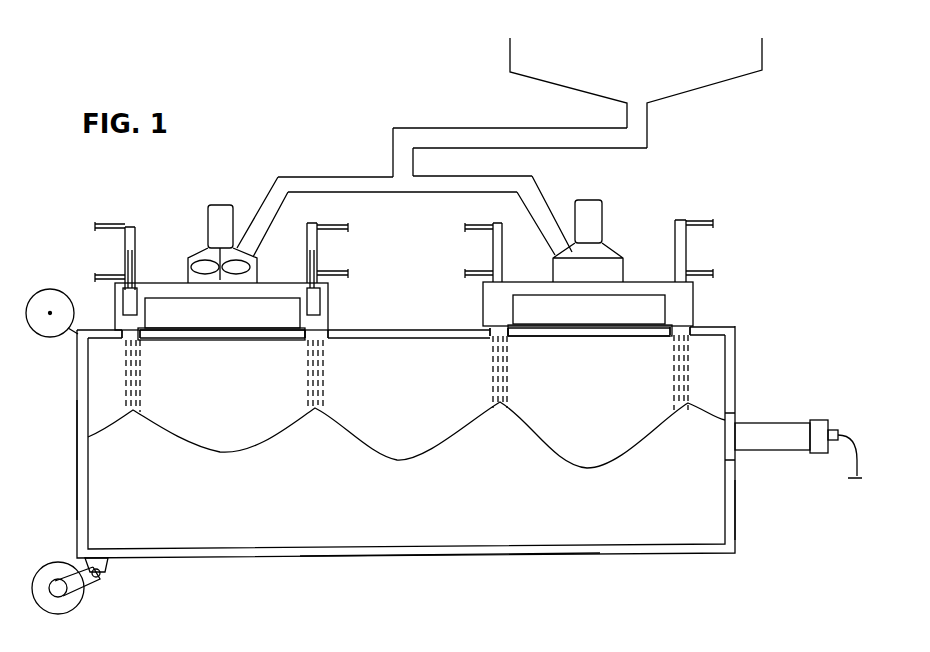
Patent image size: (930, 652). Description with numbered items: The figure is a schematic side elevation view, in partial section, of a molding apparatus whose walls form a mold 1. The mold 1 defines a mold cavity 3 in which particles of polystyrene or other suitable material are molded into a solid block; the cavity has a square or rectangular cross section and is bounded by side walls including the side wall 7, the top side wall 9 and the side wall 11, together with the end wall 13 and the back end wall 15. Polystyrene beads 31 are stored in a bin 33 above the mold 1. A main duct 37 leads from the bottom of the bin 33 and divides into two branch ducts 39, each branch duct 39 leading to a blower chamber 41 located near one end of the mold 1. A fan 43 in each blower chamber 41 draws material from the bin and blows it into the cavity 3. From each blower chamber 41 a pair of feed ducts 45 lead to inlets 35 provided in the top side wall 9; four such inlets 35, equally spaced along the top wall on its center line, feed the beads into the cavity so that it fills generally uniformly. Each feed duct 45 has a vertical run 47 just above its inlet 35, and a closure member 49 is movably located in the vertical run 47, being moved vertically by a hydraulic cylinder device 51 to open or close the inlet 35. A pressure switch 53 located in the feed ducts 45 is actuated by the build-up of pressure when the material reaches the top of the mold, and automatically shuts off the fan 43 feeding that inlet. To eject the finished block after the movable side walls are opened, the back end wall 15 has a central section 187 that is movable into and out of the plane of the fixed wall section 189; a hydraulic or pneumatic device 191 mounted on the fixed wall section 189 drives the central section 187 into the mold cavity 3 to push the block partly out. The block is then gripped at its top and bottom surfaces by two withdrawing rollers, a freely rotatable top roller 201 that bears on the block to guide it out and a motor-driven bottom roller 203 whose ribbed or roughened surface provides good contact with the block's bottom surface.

The mold 1 is at (275, 578).
The mold cavity 3 is at (700, 376).
The side wall 7 is at (604, 389).
The top side wall 9 is at (718, 326).
The side wall 11 is at (656, 558).
The end wall 13 is at (77, 500).
The back end wall 15 is at (738, 525).
The polystyrene beads 31 is at (512, 53).
The bin 33 is at (763, 52).
The inlets 35 is at (145, 340).
The main duct 37 is at (438, 128).
The branch ducts 39 is at (278, 183).
The blower chamber 41 is at (207, 240).
The fan 43 is at (247, 262).
The feed ducts 45 is at (163, 312).
The vertical run 47 is at (115, 290).
The closure member 49 is at (123, 305).
The hydraulic cylinder device 51 is at (124, 248).
The pressure switch 53 is at (120, 340).
The central section 187 is at (738, 418).
The fixed wall section 189 is at (738, 494).
The hydraulic or pneumatic device 191 is at (782, 424).
The top roller 201 is at (42, 334).
The bottom roller 203 is at (82, 602).